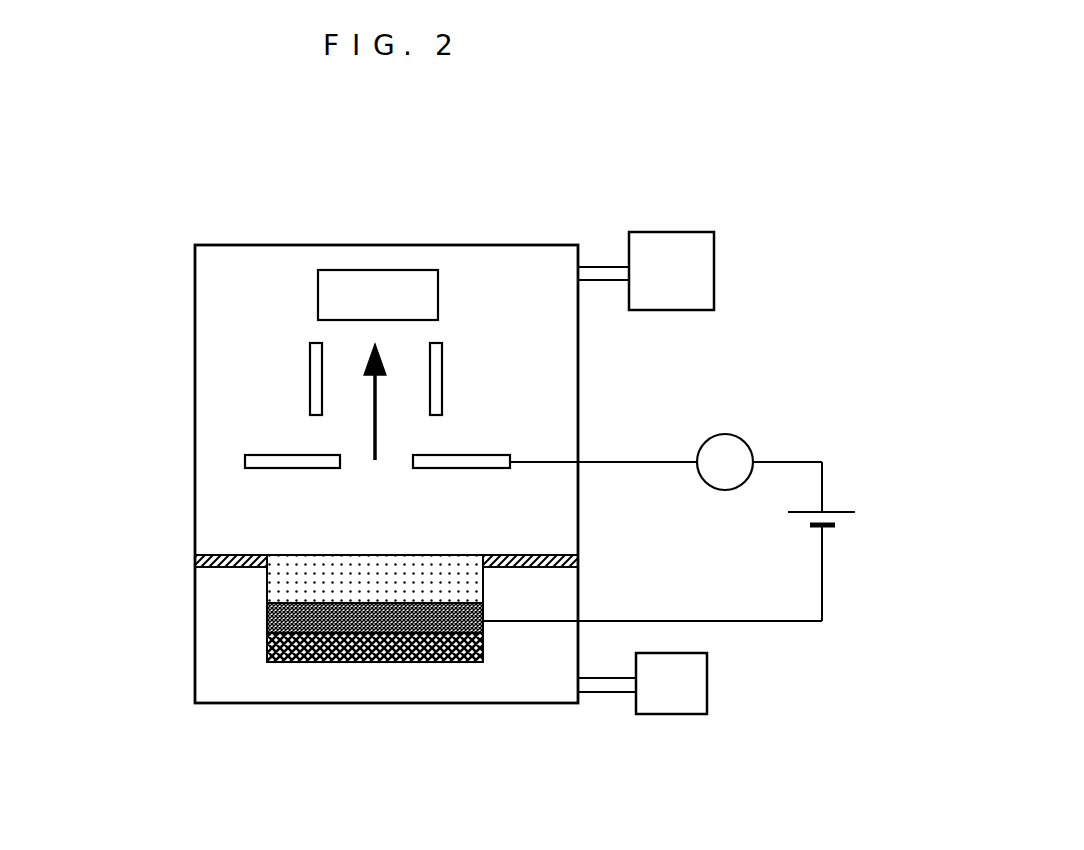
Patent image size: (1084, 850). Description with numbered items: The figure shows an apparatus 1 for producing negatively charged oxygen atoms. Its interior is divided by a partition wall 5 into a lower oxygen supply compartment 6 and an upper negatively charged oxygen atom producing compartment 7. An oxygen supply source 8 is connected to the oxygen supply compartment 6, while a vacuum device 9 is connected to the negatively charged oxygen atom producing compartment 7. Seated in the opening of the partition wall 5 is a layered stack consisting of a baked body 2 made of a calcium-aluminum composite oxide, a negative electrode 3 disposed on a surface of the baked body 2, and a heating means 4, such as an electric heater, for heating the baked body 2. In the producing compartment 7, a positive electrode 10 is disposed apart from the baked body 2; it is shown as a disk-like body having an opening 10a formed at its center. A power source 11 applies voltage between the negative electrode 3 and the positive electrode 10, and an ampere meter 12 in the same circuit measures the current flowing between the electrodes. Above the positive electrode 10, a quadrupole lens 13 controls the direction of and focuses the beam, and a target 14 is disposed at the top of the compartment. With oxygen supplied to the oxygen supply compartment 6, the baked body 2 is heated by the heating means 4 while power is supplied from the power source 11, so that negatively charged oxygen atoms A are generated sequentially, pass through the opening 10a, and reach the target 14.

The apparatus for producing negatively charged oxygen atoms 1 is at (96, 177).
The baked body 2 is at (277, 588).
The negative electrode 3 is at (267, 622).
The heating means 4 is at (267, 662).
The partition wall 5 is at (196, 562).
The oxygen supply compartment 6 is at (347, 689).
The negatively charged oxygen atom producing compartment 7 is at (278, 275).
The oxygen supply source 8 is at (642, 683).
The vacuum device 9 is at (646, 271).
The positive electrode 10 is at (478, 458).
The opening 10a is at (353, 472).
The power source 11 is at (860, 503).
The ampere meter 12 is at (740, 432).
The quadrupole lens 13 is at (308, 368).
The target 14 is at (398, 288).
The negatively charged oxygen atoms A is at (365, 423).